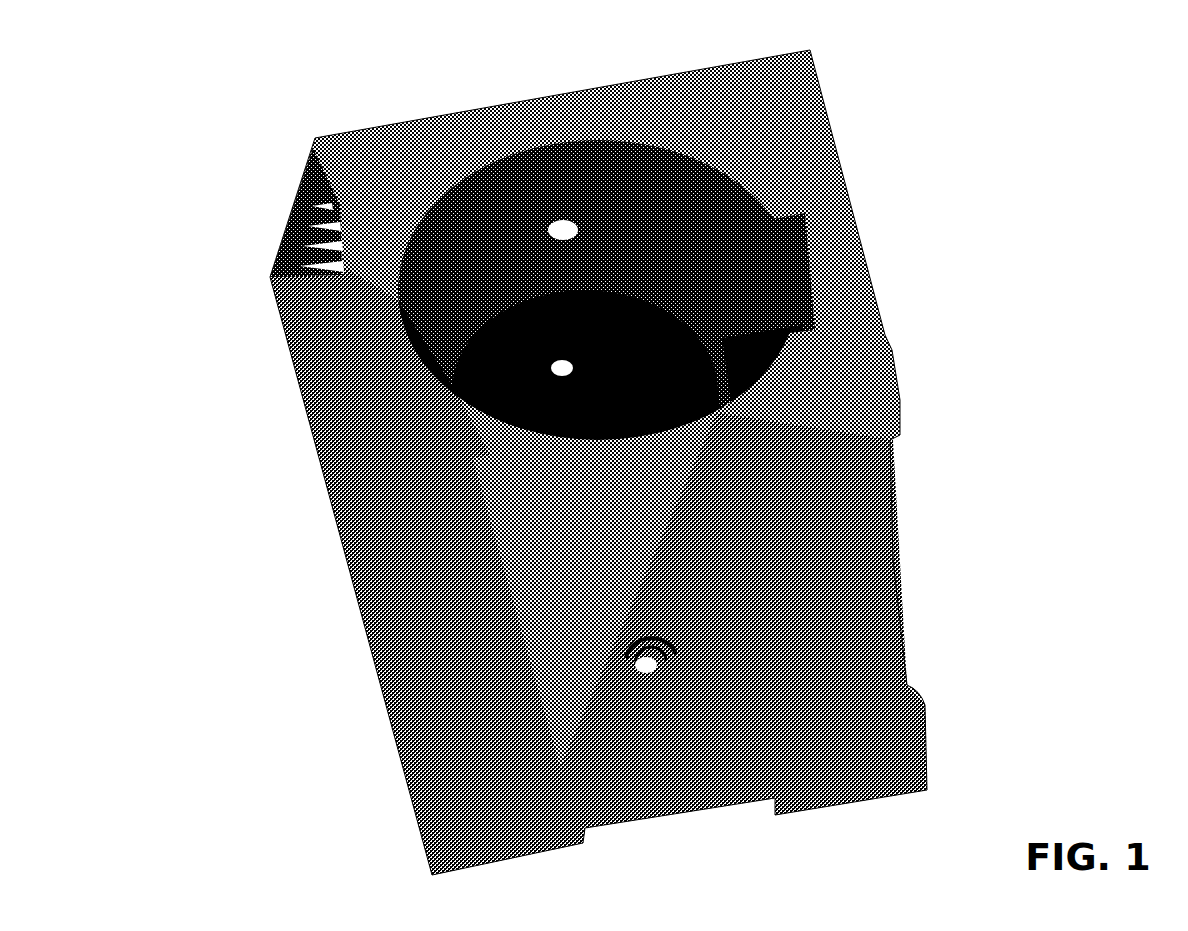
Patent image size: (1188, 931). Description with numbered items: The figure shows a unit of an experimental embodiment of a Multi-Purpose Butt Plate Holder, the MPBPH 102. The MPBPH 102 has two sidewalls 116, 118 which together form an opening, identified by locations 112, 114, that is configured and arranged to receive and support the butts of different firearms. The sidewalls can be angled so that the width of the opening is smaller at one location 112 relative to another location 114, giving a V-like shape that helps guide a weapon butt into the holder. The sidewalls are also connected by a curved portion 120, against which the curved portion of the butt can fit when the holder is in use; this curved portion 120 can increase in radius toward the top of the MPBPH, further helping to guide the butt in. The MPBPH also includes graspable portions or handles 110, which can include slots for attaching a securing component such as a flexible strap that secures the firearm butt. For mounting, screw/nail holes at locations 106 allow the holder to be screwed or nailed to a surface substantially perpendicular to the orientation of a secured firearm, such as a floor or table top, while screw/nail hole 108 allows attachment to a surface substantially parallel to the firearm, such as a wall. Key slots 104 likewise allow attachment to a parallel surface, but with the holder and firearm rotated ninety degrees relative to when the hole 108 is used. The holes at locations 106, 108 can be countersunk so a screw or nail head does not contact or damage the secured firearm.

The Multi-Purpose Butt Plate Holder 102 is at (884, 70).
The key slots 104 is at (367, 460).
The screw/nail holes 106 is at (568, 362).
The screw/nail hole 108 is at (567, 230).
The graspable portions/handles 110 is at (473, 697).
The opening location 112 is at (768, 740).
The opening location 114 is at (490, 455).
The sidewall 116 is at (370, 485).
The sidewall 118 is at (903, 347).
The curved portion 120 is at (746, 181).